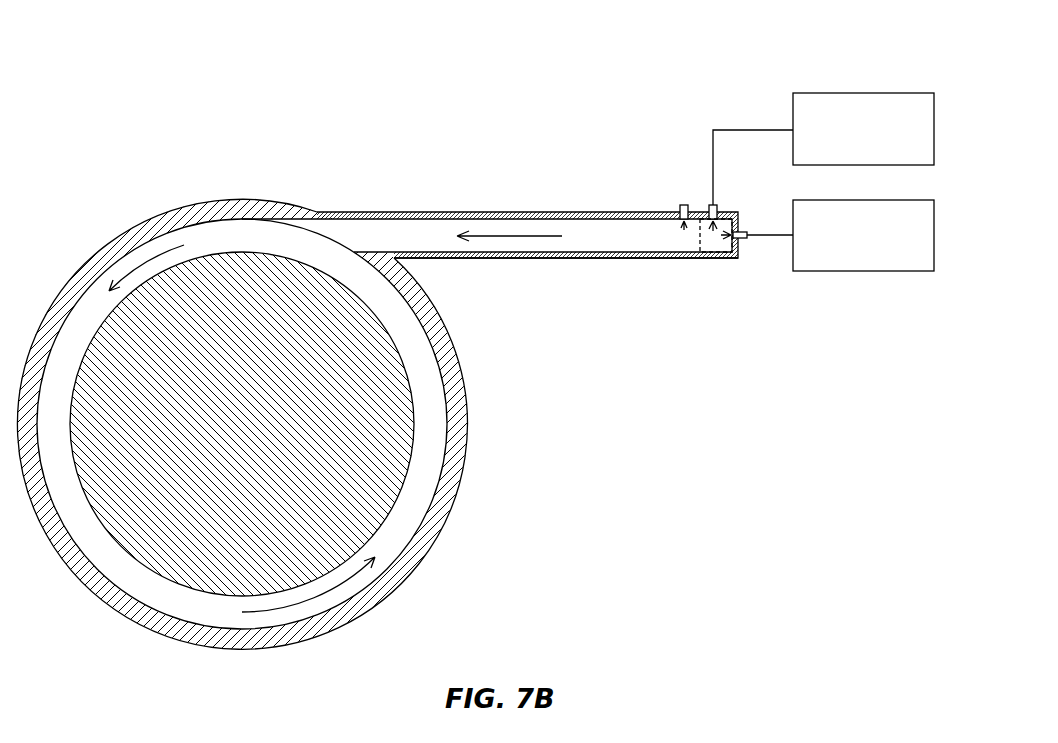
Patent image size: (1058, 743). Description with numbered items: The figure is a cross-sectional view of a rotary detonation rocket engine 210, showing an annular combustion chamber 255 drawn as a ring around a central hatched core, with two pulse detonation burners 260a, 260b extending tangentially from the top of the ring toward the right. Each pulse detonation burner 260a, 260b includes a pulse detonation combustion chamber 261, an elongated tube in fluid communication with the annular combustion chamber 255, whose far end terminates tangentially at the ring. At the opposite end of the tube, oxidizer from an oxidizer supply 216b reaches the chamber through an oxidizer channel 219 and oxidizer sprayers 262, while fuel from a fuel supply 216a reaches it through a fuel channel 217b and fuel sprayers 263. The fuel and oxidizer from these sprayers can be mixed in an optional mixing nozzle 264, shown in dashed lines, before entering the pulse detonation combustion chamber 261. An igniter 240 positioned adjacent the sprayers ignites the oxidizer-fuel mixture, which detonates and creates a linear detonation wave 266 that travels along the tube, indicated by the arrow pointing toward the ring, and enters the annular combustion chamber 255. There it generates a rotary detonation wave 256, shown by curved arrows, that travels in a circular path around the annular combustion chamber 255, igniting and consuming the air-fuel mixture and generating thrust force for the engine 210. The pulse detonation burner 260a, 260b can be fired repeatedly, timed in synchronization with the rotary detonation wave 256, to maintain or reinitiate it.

The rotary detonation rocket engine 210 is at (217, 133).
The annular combustion chamber 255 is at (63, 323).
The rotary detonation wave 256 is at (162, 255).
The pulse detonation burner 260a is at (507, 130).
The pulse detonation burner 260b is at (490, 240).
The pulse detonation combustion chamber 261 is at (606, 260).
The detonation wave 266 is at (507, 233).
The igniter 240 is at (680, 207).
The oxidizer sprayer 262 is at (711, 206).
The fuel sprayer 263 is at (745, 231).
The mixing nozzle 264 is at (697, 256).
The oxidizer channel 219 is at (744, 128).
The fuel channel 217b is at (768, 240).
The fuel supply 216a is at (862, 271).
The oxidizer supply 216b is at (865, 93).